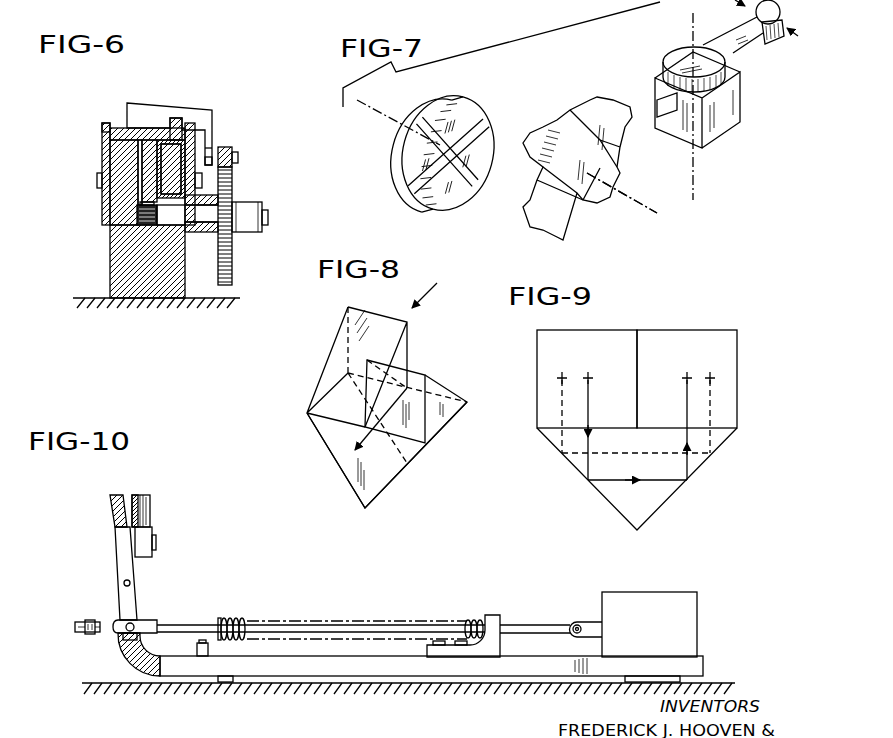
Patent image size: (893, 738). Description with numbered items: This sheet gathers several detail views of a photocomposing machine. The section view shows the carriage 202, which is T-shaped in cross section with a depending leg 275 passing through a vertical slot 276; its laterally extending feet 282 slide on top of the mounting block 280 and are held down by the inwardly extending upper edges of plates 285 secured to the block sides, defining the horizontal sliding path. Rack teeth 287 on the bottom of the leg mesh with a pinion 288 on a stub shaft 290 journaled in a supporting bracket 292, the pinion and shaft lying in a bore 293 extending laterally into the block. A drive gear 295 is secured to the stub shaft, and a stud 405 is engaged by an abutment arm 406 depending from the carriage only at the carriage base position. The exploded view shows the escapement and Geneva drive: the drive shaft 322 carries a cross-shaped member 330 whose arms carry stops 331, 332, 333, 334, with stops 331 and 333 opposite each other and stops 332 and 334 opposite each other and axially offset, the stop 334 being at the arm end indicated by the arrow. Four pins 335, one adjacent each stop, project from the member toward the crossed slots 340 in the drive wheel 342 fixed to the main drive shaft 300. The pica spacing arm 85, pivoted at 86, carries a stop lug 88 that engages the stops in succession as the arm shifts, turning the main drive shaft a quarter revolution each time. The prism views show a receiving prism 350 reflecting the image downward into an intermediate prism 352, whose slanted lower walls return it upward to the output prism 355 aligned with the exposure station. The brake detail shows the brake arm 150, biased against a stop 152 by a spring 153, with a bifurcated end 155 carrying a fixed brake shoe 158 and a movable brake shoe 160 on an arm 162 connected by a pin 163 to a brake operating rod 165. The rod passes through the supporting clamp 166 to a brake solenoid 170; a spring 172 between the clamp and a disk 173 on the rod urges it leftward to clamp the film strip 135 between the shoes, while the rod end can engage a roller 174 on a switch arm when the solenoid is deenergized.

In FIG. 6, the carriage 202 is at (120, 122).
In FIG. 6, the abutment arm 406 is at (202, 113).
In FIG. 6, the laterally extending feet 282 is at (103, 132).
In FIG. 6, the plates 285 is at (102, 138).
In FIG. 6, the vertical slot 276 is at (135, 162).
In FIG. 6, the stud 405 is at (232, 175).
In FIG. 6, the depending leg 275 is at (142, 182).
In FIG. 6, the rack teeth 287 is at (138, 207).
In FIG. 6, the pinion 288 is at (137, 220).
In FIG. 6, the mounting block 280 is at (118, 283).
In FIG. 6, the drive gear 295 is at (232, 248).
In FIG. 6, the bore 293 is at (163, 227).
In FIG. 6, the stub shaft 290 is at (170, 220).
In FIG. 6, the supporting bracket 292 is at (197, 230).
In FIG. 7, the main drive shaft 300 is at (357, 102).
In FIG. 7, the crossed slots 340 is at (448, 103).
In FIG. 7, the drive wheel 342 is at (402, 170).
In FIG. 7, the cross-shaped member 330 is at (565, 214).
In FIG. 7, the stop 331 is at (608, 100).
In FIG. 7, the stop 332 is at (533, 137).
In FIG. 7, the stop 333 is at (537, 224).
In FIG. 7, the stop 334 is at (624, 167).
In FIG. 7, the pins 335 is at (573, 113).
In FIG. 7, the drive shaft 322 is at (645, 213).
In FIG. 7, the pivot 86 is at (682, 57).
In FIG. 7, the pica spacing arm 85 is at (733, 52).
In FIG. 7, the stop lug 88 is at (670, 127).
In FIG. 8, the receiving prism 350 is at (332, 363).
In FIG. 9, the receiving prism 350 is at (618, 337).
In FIG. 8, the output prism 355 is at (442, 420).
In FIG. 9, the output prism 355 is at (715, 337).
In FIG. 8, the intermediate prism 352 is at (340, 465).
In FIG. 9, the intermediate prism 352 is at (650, 500).
In FIG. 10, the record strip of film 135 is at (136, 490).
In FIG. 10, the brake arm 150 is at (328, 667).
In FIG. 10, the stop 152 is at (227, 682).
In FIG. 10, the spring 153 is at (190, 647).
In FIG. 10, the bifurcated end 155 is at (137, 567).
In FIG. 10, the fixed brake shoe 158 is at (150, 505).
In FIG. 10, the movable brake shoe 160 is at (112, 508).
In FIG. 10, the arm 162 is at (120, 570).
In FIG. 10, the pin 163 is at (136, 623).
In FIG. 10, the brake operating rod 165 is at (203, 630).
In FIG. 10, the supporting clamp 166 is at (490, 615).
In FIG. 10, the brake solenoid 170 is at (635, 602).
In FIG. 10, the spring 172 is at (240, 620).
In FIG. 10, the disk 173 is at (222, 620).
In FIG. 10, the roller 174 is at (92, 635).